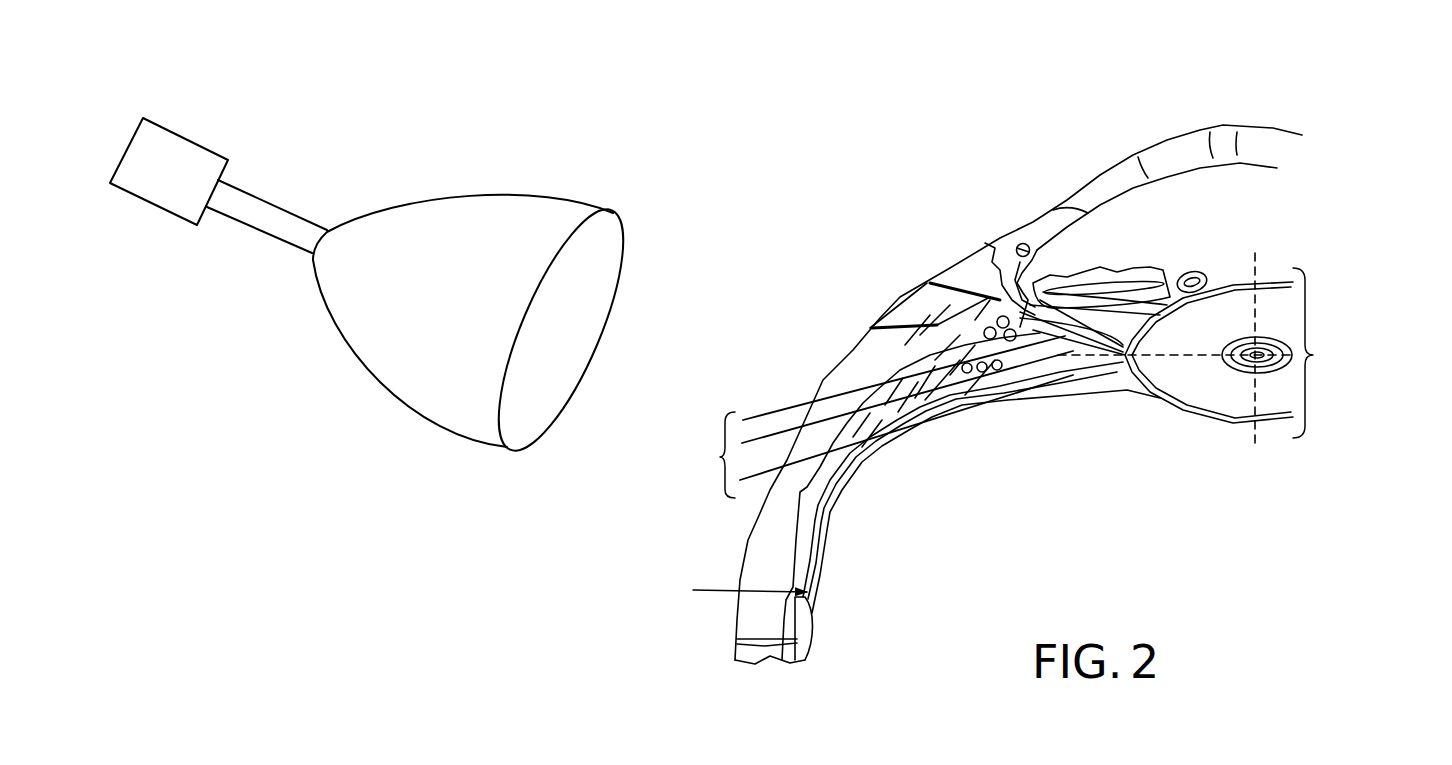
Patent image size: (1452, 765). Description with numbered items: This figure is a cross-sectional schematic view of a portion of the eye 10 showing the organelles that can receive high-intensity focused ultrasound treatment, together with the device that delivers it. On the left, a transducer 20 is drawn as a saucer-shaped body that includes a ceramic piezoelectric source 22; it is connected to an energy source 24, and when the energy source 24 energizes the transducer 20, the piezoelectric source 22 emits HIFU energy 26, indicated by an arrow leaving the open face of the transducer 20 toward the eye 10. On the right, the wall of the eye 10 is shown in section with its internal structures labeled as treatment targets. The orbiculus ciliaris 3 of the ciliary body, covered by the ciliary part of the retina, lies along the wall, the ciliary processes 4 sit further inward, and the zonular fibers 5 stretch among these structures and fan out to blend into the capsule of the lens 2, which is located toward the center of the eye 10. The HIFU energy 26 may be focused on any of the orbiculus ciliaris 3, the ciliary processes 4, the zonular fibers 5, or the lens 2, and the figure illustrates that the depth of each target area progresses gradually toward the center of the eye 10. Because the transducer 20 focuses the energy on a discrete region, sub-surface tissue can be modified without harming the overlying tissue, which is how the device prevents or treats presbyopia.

The lens 2 is at (1325, 355).
The orbiculus ciliaris 3 is at (797, 535).
The ciliary processes 4 is at (1032, 342).
The zonular fibers 5 is at (708, 457).
The eye 10 is at (820, 258).
The transducer 20 is at (607, 249).
The ceramic piezoelectric source 22 is at (558, 306).
The energy source 24 is at (163, 150).
The HIFU energy 26 is at (565, 328).